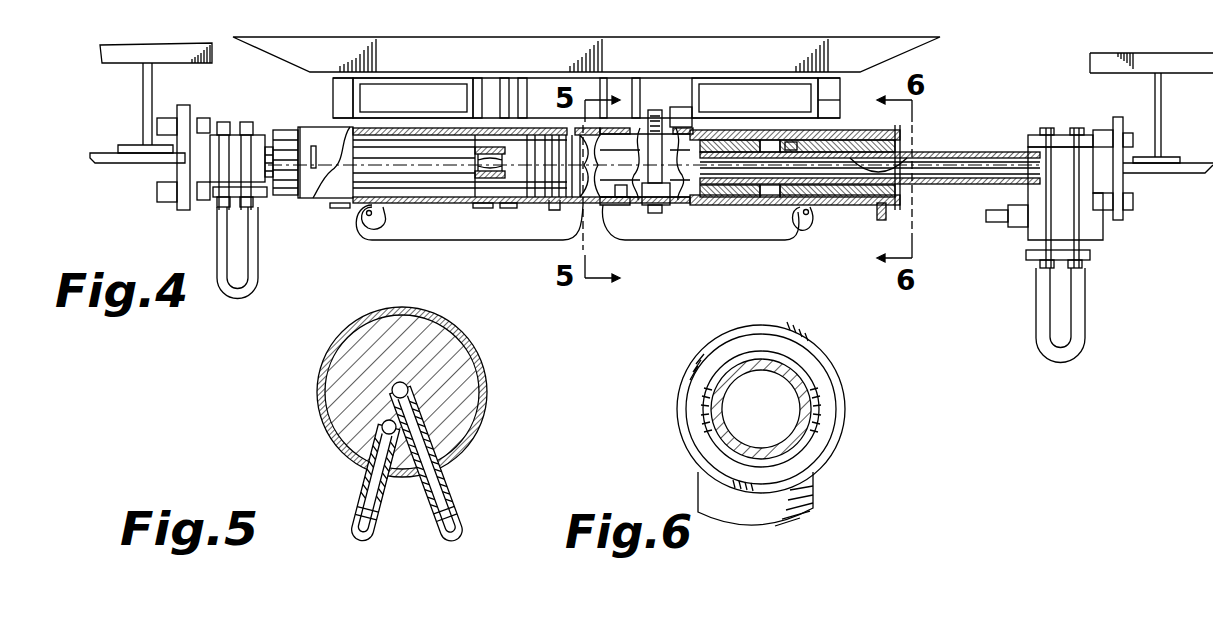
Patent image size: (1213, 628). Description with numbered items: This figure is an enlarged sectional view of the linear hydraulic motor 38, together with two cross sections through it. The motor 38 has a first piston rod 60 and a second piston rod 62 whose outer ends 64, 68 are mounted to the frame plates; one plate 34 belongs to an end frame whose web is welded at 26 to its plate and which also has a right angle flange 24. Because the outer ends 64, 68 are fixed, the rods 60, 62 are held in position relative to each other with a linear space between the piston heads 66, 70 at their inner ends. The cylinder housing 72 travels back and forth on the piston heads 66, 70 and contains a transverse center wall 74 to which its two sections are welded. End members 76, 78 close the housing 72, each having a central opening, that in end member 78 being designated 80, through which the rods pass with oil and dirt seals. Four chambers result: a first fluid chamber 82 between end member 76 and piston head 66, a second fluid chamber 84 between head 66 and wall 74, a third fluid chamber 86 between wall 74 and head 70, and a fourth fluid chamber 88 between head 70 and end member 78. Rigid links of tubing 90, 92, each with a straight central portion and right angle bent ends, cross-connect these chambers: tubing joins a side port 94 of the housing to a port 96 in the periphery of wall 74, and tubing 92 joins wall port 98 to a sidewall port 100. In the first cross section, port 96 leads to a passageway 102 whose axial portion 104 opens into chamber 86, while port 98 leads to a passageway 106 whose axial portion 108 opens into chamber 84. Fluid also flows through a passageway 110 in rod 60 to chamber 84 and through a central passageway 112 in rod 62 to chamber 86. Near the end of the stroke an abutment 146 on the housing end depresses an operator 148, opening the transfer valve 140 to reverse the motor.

In FIG. 4, the right angle flange 24 is at (230, 6).
In FIG. 4, the weld 26 is at (426, 6).
In FIG. 4, the plate 34 is at (968, 6).
In FIG. 4, the linear hydraulic motor 38 is at (345, 222).
In FIG. 4, the first piston rod 60 is at (448, 172).
In FIG. 4, the second piston rod 62 is at (968, 192).
In FIG. 6, the second piston rod 62 is at (717, 390).
In FIG. 4, the outer end of piston rod 64 is at (203, 202).
In FIG. 4, the piston head 66 is at (548, 205).
In FIG. 4, the outer end of piston rod 68 is at (1058, 152).
In FIG. 4, the piston head 70 is at (757, 200).
In FIG. 4, the cylinder housing 72 is at (778, 208).
In FIG. 5, the cylinder housing 72 is at (300, 412).
In FIG. 6, the cylinder housing 72 is at (838, 412).
In FIG. 4, the transverse center wall 74 is at (634, 150).
In FIG. 5, the transverse center wall 74 is at (457, 393).
In FIG. 4, the end member 76 is at (325, 165).
In FIG. 4, the end member 78 is at (848, 205).
In FIG. 6, the end member 78 is at (815, 442).
In FIG. 4, the central opening 80 is at (890, 160).
In FIG. 4, the first fluid chamber 82 is at (410, 183).
In FIG. 4, the second fluid chamber 84 is at (542, 140).
In FIG. 4, the third fluid chamber 86 is at (707, 192).
In FIG. 4, the fourth fluid chamber 88 is at (795, 147).
In FIG. 4, the link of tubing 90 is at (480, 212).
In FIG. 5, the link of tubing 90 is at (350, 522).
In FIG. 4, the link of tubing 92 is at (660, 215).
In FIG. 5, the link of tubing 92 is at (467, 523).
In FIG. 4, the port 94 is at (357, 222).
In FIG. 5, the port 96 is at (383, 450).
In FIG. 5, the port 98 is at (430, 455).
In FIG. 4, the port 100 is at (790, 202).
In FIG. 5, the passageway 102 is at (383, 434).
In FIG. 4, the axial portion 104 is at (622, 197).
In FIG. 5, the axial portion 104 is at (385, 420).
In FIG. 5, the passageway 106 is at (458, 434).
In FIG. 4, the axial portion 108 is at (553, 212).
In FIG. 5, the axial portion 108 is at (408, 385).
In FIG. 4, the passageway 110 is at (490, 152).
In FIG. 4, the central passageway 112 is at (952, 195).
In FIG. 4, the transfer valve 140 is at (1103, 238).
In FIG. 4, the abutment 146 is at (882, 222).
In FIG. 6, the abutment 146 is at (800, 520).
In FIG. 4, the operator 148 is at (998, 225).